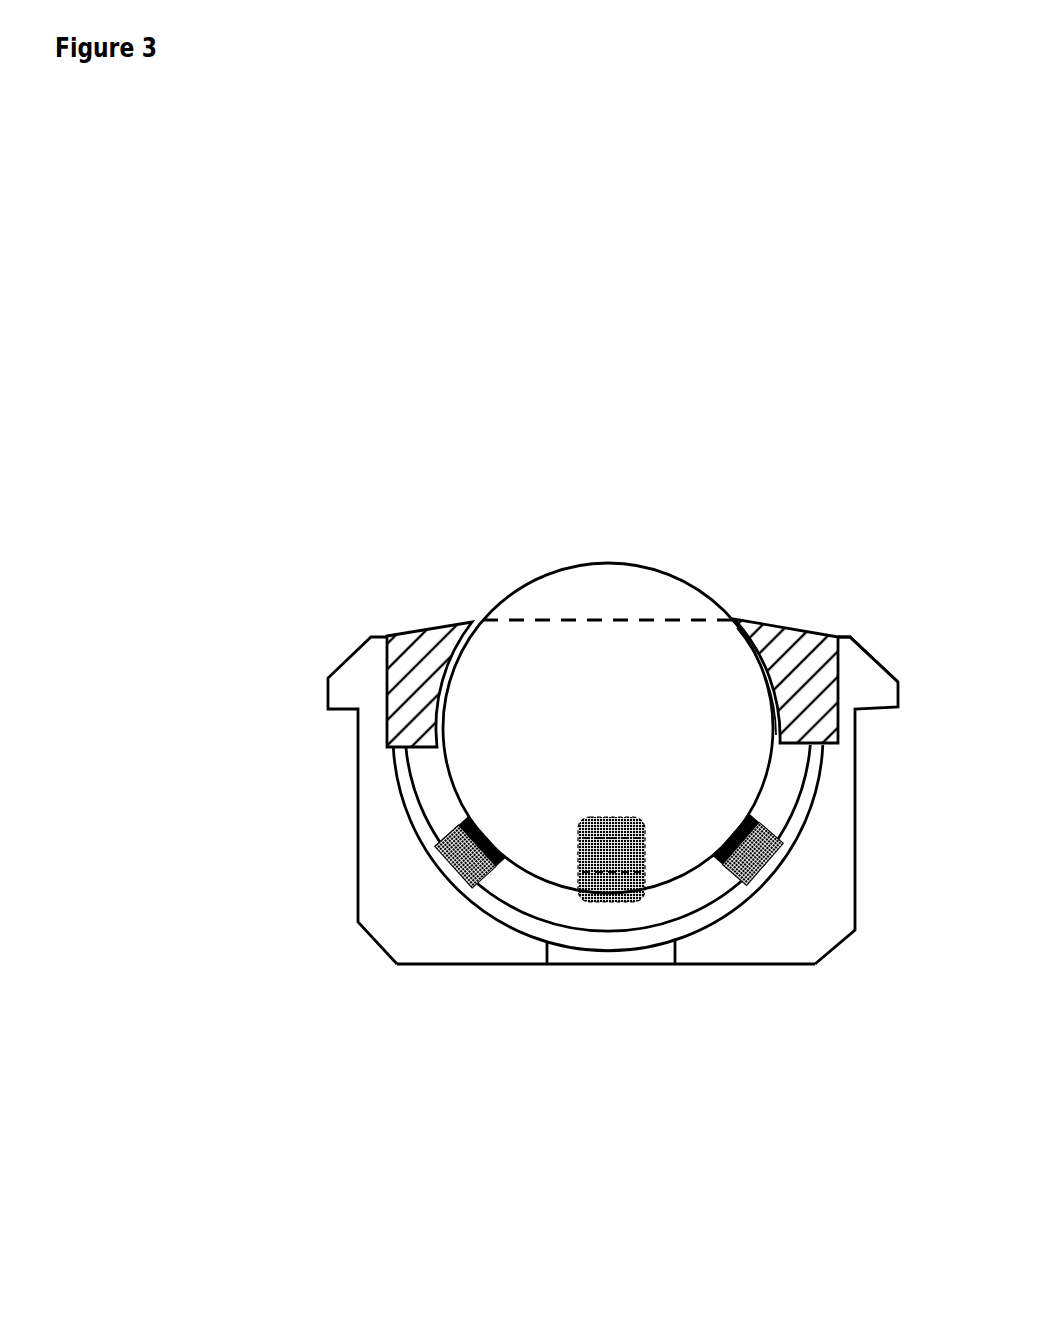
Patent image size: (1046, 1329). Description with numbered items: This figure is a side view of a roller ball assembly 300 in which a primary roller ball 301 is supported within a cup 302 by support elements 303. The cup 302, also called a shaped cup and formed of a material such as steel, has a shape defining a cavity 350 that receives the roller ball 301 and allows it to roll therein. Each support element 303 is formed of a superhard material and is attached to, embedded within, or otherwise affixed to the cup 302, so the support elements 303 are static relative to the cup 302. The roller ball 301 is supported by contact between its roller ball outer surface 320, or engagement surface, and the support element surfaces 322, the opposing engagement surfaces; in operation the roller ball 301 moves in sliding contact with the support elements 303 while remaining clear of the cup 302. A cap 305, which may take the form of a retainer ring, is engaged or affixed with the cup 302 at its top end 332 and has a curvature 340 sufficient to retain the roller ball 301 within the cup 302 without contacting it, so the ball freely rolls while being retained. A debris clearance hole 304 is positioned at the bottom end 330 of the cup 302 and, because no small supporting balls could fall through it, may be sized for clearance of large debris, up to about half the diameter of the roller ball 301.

The roller ball assembly 300 is at (518, 333).
The roller ball 301 is at (503, 572).
The cup 302 is at (358, 795).
The support elements 303 is at (446, 868).
The debris clearance hole 304 is at (645, 973).
The cap 305 is at (813, 635).
The roller ball outer surface 320 is at (608, 560).
The support element surfaces 322 is at (734, 841).
The bottom end 330 is at (739, 967).
The top end 332 is at (851, 634).
The curvature 340 is at (780, 683).
The cavity 350 is at (785, 785).